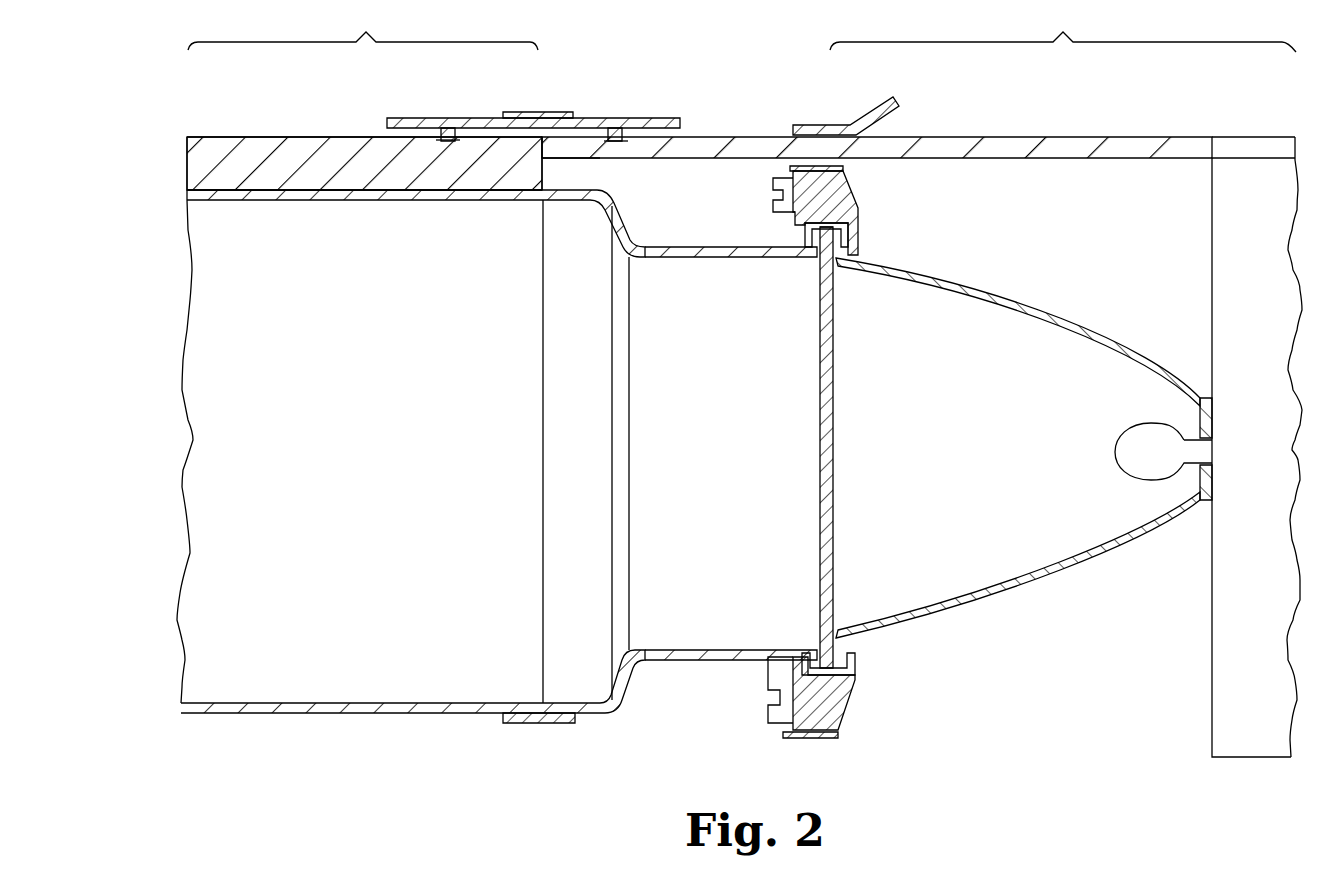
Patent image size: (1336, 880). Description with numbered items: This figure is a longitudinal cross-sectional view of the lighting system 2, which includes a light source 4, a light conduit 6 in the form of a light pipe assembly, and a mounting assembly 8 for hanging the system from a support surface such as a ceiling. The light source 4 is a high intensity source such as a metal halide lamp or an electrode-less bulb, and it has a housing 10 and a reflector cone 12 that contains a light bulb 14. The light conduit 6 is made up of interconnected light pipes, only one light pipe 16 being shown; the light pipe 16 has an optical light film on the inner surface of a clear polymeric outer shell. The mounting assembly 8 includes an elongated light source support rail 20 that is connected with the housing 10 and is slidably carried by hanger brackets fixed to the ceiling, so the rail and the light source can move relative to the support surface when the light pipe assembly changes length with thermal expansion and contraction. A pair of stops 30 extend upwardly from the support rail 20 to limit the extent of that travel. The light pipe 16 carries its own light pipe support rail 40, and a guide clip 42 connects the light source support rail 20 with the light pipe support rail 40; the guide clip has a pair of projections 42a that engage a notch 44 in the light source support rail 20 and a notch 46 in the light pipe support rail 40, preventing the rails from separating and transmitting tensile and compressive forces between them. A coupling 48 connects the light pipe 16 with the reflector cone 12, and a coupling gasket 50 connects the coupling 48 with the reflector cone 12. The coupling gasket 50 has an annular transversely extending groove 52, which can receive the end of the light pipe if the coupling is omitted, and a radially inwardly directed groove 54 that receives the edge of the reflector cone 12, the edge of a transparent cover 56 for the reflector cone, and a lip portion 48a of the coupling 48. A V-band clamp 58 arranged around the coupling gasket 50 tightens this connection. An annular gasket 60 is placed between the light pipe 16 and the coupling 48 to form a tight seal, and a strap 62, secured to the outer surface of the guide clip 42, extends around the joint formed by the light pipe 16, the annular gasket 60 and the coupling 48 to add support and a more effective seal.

The lighting system 2 is at (160, 743).
The light source 4 is at (1063, 28).
The light conduit 6 is at (363, 27).
The mounting assembly 8 is at (747, 132).
The housing 10 is at (1208, 734).
The reflector cone 12 is at (1023, 605).
The light bulb 14 is at (1122, 462).
The light pipe 16 is at (240, 715).
The light source support rail 20 is at (994, 151).
The stops 30 is at (893, 120).
The light pipe support rail 40 is at (255, 146).
The guide clip 42 is at (447, 126).
The projections 42a is at (438, 138).
The notch 44 is at (630, 137).
The notch 46 is at (446, 142).
The coupling 48 is at (699, 661).
The lip portion 48a is at (850, 238).
The coupling gasket 50 is at (853, 692).
The annular transversely extending groove 52 is at (775, 197).
The radially inwardly directed groove 54 is at (805, 236).
The transparent cover 56 is at (836, 330).
The V-band clamp 58 is at (822, 165).
The annular gasket 60 is at (530, 195).
The strap 62 is at (515, 722).